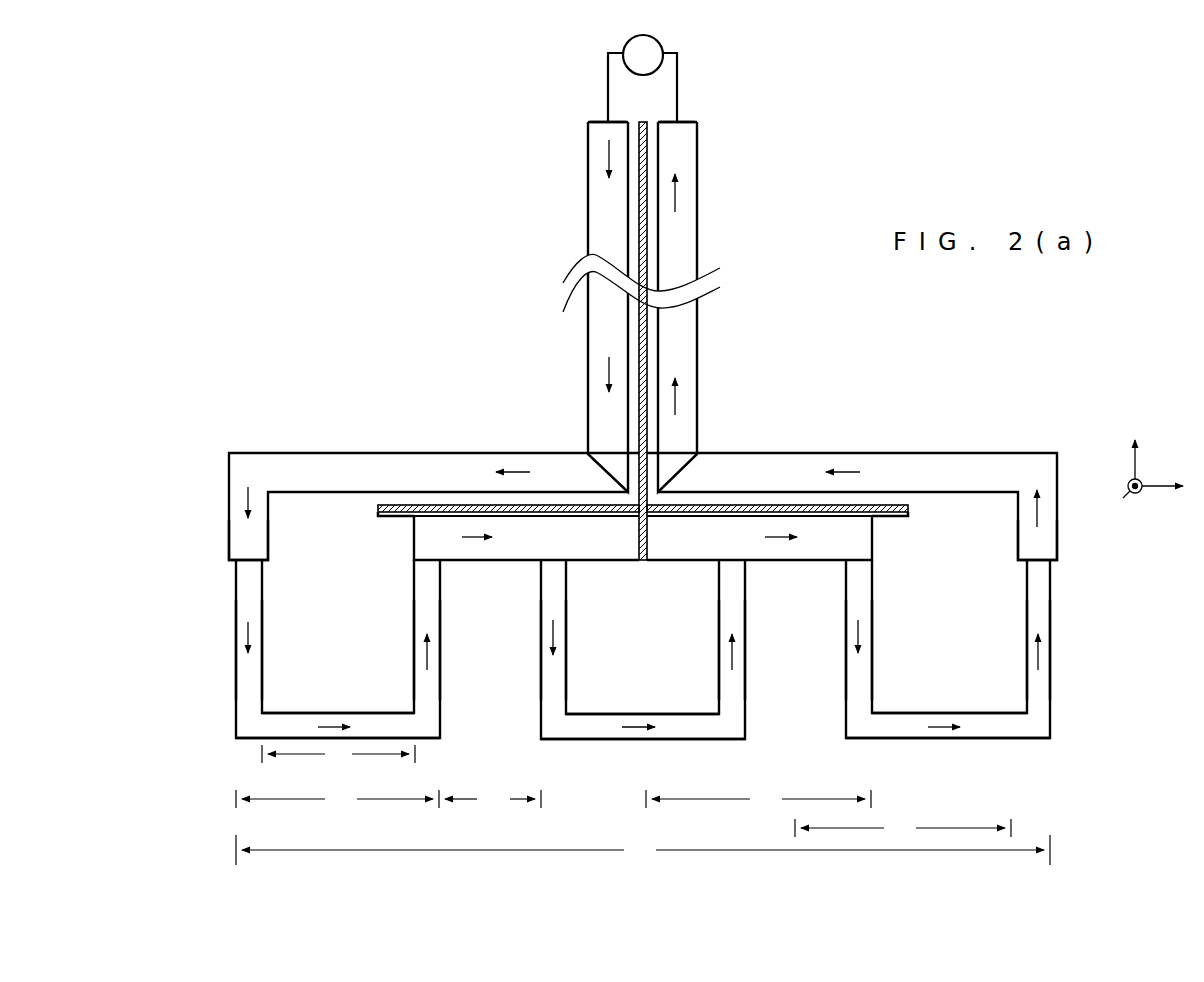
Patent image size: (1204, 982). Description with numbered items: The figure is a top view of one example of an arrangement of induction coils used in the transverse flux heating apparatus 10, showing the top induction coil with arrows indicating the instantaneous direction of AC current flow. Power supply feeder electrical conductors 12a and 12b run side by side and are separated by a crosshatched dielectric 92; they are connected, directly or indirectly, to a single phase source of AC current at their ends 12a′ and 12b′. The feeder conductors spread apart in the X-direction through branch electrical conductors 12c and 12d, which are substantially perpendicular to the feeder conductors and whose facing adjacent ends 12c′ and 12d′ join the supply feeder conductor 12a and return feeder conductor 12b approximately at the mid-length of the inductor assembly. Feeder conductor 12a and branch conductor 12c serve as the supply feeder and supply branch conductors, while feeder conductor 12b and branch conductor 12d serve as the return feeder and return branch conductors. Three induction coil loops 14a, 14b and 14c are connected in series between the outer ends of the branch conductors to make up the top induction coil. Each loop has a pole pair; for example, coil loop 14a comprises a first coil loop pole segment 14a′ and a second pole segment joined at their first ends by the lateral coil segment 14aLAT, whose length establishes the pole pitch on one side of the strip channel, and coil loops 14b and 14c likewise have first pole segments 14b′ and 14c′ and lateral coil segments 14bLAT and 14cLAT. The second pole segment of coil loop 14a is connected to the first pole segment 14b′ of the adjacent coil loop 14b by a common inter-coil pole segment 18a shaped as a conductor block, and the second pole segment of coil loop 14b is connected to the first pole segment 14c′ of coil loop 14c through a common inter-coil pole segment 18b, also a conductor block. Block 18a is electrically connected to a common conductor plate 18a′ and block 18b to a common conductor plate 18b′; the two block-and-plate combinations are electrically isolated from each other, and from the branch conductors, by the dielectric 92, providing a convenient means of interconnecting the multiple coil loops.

The transverse flux heating apparatus 10 is at (1150, 603).
The supply feeder conductor 12a is at (589, 366).
The end of supply feeder conductor 12a′ is at (598, 114).
The return feeder conductor 12b is at (696, 364).
The end of return feeder conductor 12b′ is at (688, 114).
The supply branch conductor 12c is at (400, 462).
The adjacent end of supply branch conductor 12c′ is at (577, 462).
The return branch conductor 12d is at (900, 465).
The adjacent end of return branch conductor 12d′ is at (720, 462).
The induction coil loop 14a is at (374, 671).
The first coil loop pole segment 14a′ is at (254, 678).
The lateral coil segment 14aLAT is at (362, 713).
The induction coil loop 14b is at (675, 671).
The first coil loop pole segment 14b′ is at (558, 678).
The lateral coil segment 14bLAT is at (669, 714).
The induction coil loop 14c is at (978, 671).
The first coil loop pole segment 14c′ is at (864, 678).
The lateral coil segment 14cLAT is at (976, 713).
The common inter-coil pole segment 18a is at (526, 538).
The common conductor plate 18a′ is at (380, 518).
The common inter-coil pole segment 18b is at (759, 538).
The common conductor plate 18b′ is at (908, 518).
The dielectric 92 is at (643, 121).